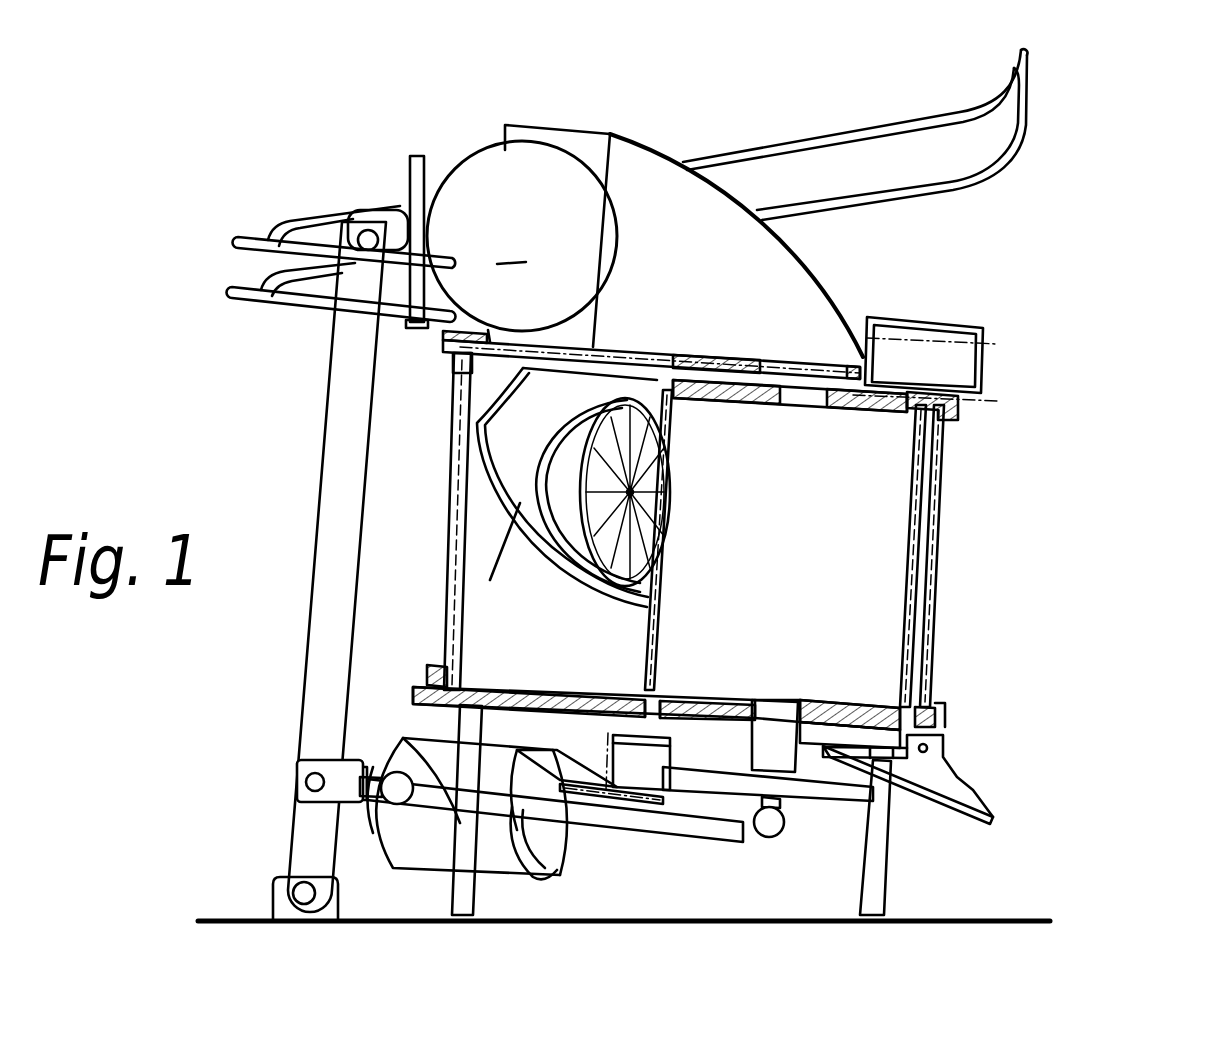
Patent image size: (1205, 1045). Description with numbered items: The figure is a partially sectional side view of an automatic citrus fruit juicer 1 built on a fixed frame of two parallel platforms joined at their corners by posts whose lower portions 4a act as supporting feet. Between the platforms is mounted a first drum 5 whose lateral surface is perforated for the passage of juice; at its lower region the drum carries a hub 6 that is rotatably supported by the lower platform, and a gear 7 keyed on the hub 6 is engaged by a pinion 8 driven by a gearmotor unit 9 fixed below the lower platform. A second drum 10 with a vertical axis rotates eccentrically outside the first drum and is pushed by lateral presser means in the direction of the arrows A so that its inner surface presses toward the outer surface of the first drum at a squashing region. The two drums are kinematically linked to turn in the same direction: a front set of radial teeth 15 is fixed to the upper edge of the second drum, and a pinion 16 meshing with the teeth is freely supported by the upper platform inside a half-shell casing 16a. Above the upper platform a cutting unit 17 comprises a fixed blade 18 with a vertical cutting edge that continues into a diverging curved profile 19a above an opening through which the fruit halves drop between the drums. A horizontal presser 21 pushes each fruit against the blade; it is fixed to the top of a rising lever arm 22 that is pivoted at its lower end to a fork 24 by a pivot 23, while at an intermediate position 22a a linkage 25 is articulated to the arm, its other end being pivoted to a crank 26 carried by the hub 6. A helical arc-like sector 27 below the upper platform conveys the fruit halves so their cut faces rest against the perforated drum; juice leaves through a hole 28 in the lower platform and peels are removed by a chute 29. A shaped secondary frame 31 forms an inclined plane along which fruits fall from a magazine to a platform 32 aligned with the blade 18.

The automatic citrus fruit juicer 1 is at (1108, 510).
The supporting feet portions 4a is at (403, 738).
The first drum 5 is at (700, 630).
The hub 6 is at (783, 752).
The gear 7 is at (735, 790).
The pinion 8 is at (690, 848).
The gearmotor unit 9 is at (497, 860).
The second drum 10 is at (455, 452).
The front set of radial teeth 15 is at (440, 350).
The pinion 16 is at (947, 370).
The casing 16a is at (987, 327).
The cutting unit 17 is at (312, 165).
The fixed blade 18 is at (500, 137).
The diverging curved profile 19a is at (582, 138).
The horizontal presser 21 is at (393, 230).
The rising lever arm 22 is at (350, 343).
The intermediate position 22a is at (340, 775).
The pivot 23 is at (282, 877).
The fork 24 is at (305, 897).
The linkage 25 is at (660, 805).
The crank 26 is at (785, 830).
The arc-like sector 27 is at (520, 530).
The juice exit hole 28 is at (930, 713).
The chute 29 is at (980, 793).
The shaped secondary frame 31 is at (955, 185).
The platform 32 is at (233, 300).
The lateral pressing direction arrows A is at (957, 493).